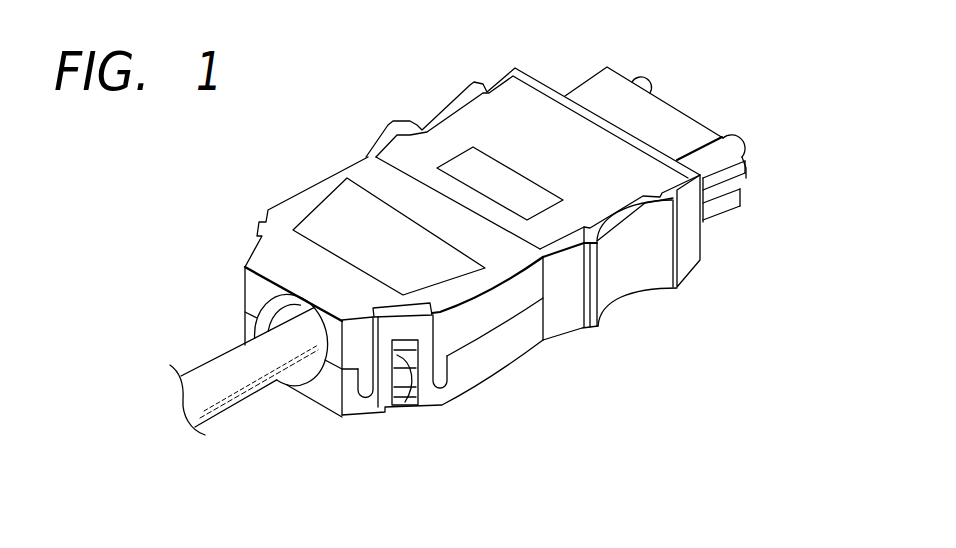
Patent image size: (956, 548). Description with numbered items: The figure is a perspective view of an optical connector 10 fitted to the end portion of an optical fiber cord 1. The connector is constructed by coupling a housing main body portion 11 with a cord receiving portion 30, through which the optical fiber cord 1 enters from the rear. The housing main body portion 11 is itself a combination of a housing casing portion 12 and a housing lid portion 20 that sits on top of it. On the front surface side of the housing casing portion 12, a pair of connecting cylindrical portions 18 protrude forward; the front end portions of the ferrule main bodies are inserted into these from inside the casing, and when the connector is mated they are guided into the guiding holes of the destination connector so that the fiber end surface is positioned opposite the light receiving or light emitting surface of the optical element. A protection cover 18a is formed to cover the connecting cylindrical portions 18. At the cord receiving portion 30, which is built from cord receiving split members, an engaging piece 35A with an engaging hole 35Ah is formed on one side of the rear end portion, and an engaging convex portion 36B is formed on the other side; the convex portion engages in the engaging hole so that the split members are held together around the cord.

The optical fiber cord 1 is at (247, 409).
The optical connector 10 is at (479, 323).
The housing main body portion 11 is at (628, 304).
The housing casing portion 12 is at (668, 286).
The connecting cylindrical portion 18 is at (650, 84).
The protection cover 18a is at (587, 88).
The housing lid portion 20 is at (500, 90).
The cord receiving portion 30 is at (508, 372).
The engaging piece 35A is at (391, 306).
The engaging hole 35Ah is at (392, 353).
The engaging convex portion 36B is at (403, 357).